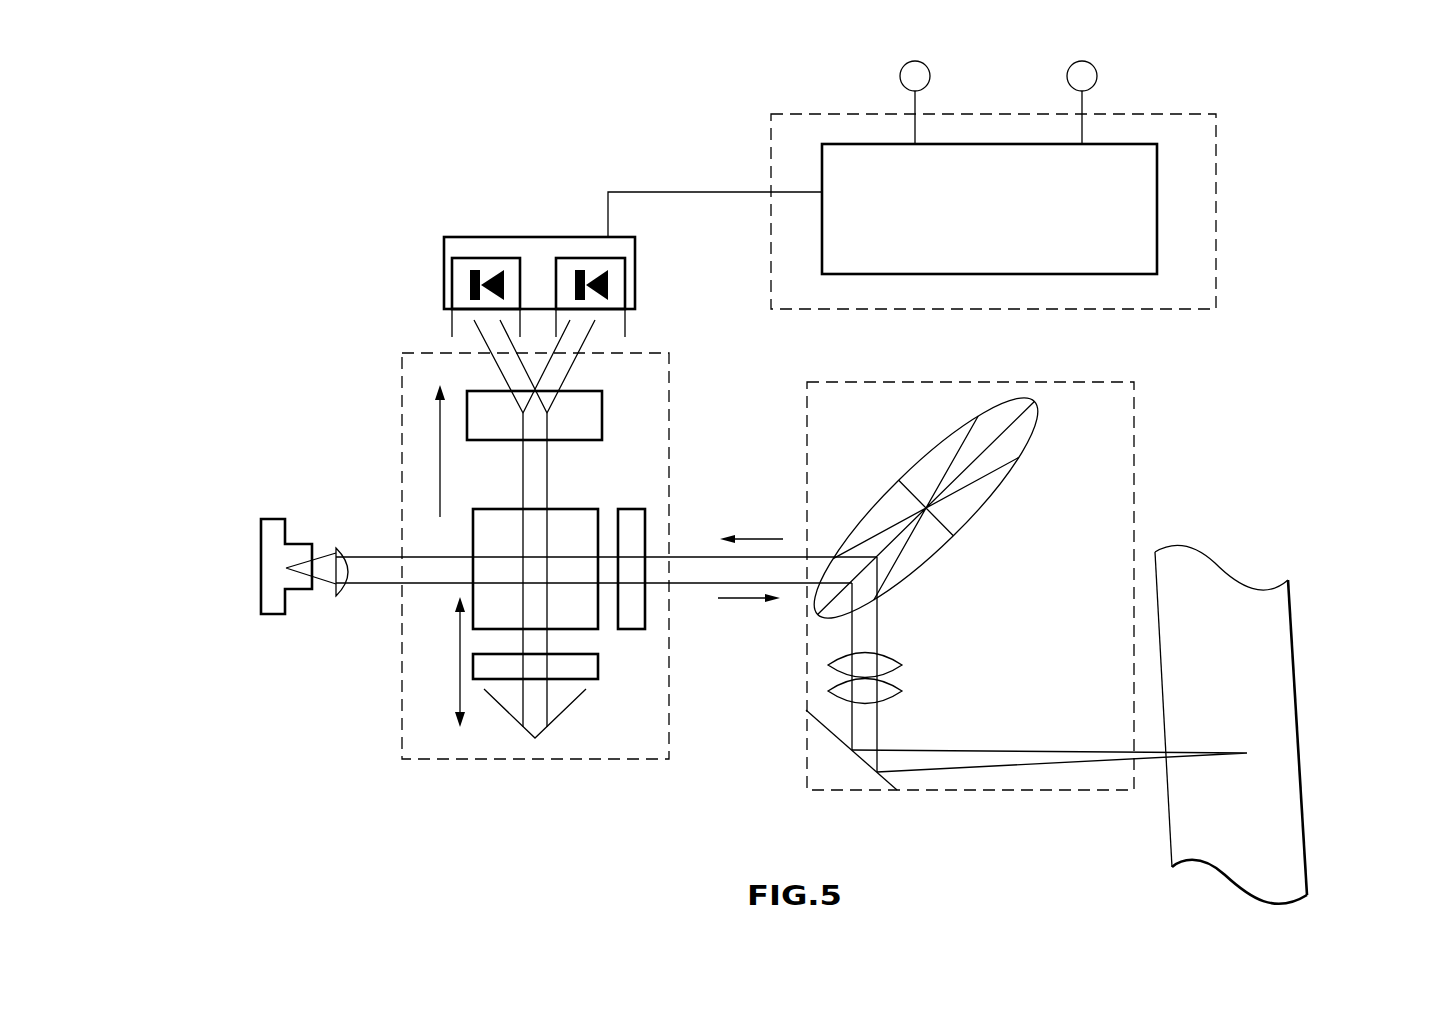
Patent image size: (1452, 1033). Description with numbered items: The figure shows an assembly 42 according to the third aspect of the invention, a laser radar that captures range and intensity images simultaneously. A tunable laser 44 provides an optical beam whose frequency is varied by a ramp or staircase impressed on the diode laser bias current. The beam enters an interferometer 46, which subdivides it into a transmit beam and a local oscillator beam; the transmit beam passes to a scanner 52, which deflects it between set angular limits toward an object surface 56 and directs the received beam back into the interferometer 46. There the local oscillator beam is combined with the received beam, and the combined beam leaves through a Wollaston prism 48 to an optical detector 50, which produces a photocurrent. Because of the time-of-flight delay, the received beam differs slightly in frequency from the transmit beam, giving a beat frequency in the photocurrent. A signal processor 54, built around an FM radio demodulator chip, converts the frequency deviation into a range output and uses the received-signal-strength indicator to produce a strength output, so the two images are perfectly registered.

The assembly 42 is at (396, 128).
The tunable laser 44 is at (277, 615).
The interferometer 46 is at (432, 760).
The Wollaston prism 48 is at (593, 390).
The optical detector 50 is at (555, 237).
The scanner 52 is at (943, 382).
The signal processor 54 is at (840, 112).
The object surface 56 is at (1163, 543).